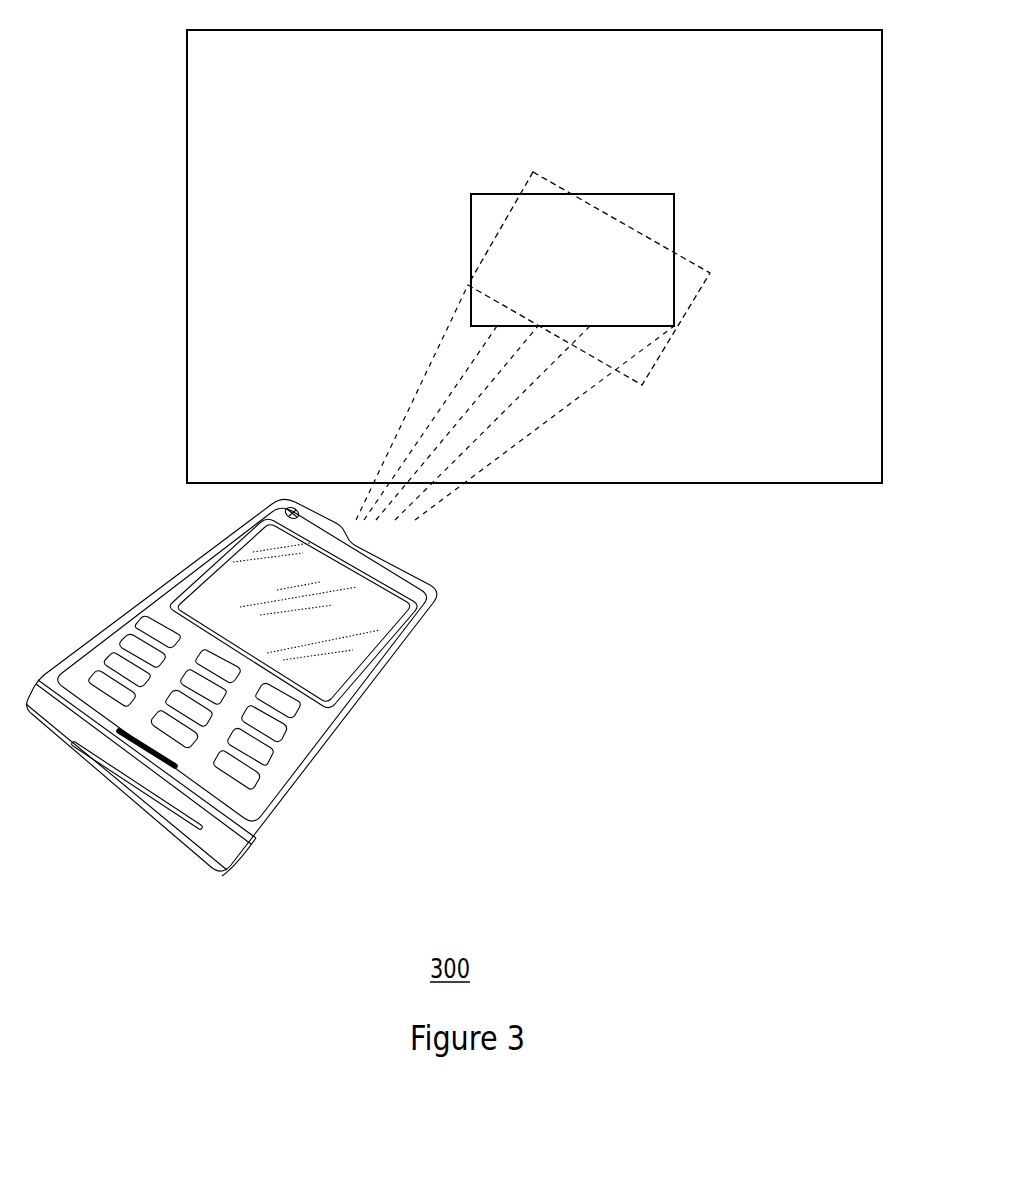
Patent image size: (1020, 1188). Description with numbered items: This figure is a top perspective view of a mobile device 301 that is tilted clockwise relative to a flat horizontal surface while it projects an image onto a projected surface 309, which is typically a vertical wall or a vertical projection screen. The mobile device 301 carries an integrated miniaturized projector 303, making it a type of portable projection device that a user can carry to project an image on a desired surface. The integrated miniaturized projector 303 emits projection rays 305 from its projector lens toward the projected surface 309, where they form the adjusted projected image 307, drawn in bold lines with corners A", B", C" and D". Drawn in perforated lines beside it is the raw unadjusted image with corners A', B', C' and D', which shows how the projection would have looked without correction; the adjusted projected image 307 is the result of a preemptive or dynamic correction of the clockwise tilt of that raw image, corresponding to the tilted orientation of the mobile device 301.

The mobile device 301 is at (425, 665).
The integrated miniaturized projector 303 is at (382, 531).
The projection rays 305 is at (585, 413).
The adjusted projected image 307 is at (634, 203).
The projected surface 309 is at (822, 400).